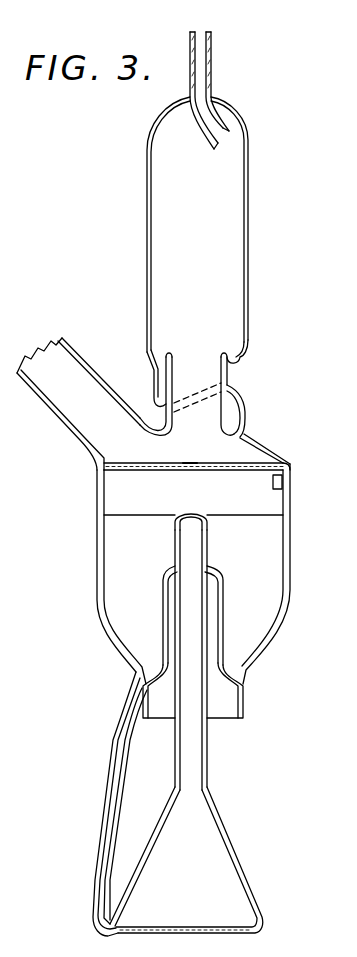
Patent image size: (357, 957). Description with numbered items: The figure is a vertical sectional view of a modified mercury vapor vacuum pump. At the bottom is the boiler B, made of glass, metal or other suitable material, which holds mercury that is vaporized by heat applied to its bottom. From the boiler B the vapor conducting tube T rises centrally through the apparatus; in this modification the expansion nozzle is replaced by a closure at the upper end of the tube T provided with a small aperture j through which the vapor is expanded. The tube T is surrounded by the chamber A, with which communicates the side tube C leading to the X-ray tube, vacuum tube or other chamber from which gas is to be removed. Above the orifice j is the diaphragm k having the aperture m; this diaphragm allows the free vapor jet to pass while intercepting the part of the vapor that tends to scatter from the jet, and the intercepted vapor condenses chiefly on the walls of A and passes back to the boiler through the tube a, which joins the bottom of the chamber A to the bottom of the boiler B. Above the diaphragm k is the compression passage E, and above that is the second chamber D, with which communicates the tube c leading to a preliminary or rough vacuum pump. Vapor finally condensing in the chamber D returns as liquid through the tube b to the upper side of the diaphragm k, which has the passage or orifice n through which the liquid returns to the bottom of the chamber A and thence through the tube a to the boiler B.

The tube c is at (212, 45).
The second chamber D is at (250, 242).
The compression passage E is at (226, 377).
The tube b is at (242, 397).
The tube C is at (78, 404).
The diaphragm k is at (222, 467).
The chamber A is at (291, 540).
The passage or orifice n is at (291, 482).
The aperture m is at (190, 470).
The small aperture j is at (195, 514).
The vapor conducting tube T is at (211, 606).
The tube a is at (112, 763).
The boiler B is at (233, 853).